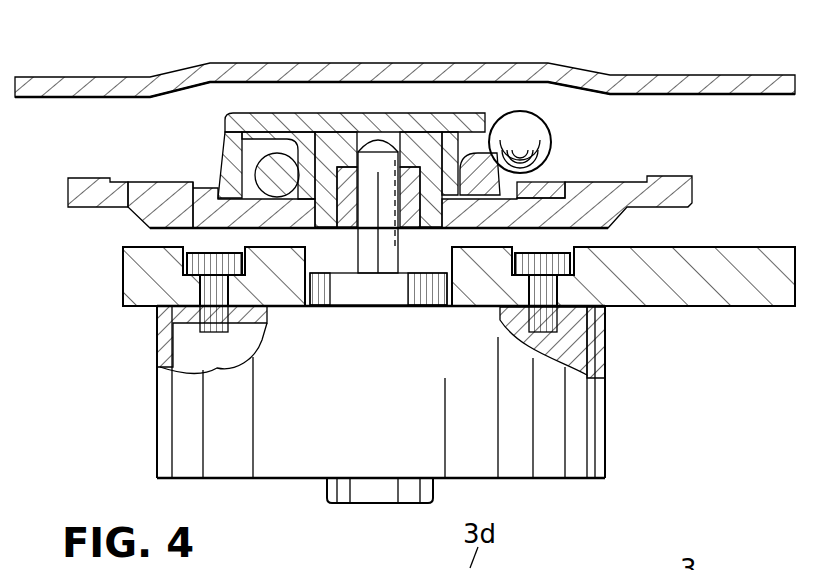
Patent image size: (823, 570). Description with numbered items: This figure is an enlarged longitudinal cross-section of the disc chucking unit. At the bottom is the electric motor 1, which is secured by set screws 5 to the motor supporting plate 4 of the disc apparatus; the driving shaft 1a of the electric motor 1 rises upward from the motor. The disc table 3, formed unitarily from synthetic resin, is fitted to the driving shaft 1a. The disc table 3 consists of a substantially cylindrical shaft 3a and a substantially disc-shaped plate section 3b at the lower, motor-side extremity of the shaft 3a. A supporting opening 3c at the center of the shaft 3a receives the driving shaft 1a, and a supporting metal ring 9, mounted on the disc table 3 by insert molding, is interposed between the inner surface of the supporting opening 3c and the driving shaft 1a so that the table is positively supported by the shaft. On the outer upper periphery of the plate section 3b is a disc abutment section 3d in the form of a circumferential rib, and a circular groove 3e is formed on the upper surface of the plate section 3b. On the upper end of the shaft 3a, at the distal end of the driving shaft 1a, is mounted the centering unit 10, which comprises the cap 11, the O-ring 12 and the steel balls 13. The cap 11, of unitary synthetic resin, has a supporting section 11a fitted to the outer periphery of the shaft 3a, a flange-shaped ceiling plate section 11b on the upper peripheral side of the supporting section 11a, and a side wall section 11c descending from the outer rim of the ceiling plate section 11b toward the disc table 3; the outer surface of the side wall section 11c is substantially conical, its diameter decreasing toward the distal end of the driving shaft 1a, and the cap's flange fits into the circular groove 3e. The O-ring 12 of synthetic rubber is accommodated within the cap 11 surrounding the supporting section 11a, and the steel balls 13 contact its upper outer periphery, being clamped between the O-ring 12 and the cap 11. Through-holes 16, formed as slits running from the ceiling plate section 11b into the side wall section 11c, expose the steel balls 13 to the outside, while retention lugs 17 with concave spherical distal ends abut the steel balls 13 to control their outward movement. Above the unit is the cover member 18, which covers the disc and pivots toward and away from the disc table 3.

The electric motor 1 is at (590, 408).
The driving shaft 1a is at (365, 250).
The disc table 3 is at (361, 131).
The shaft 3a is at (457, 150).
The plate section 3b is at (138, 180).
The supporting opening 3c is at (387, 143).
The disc abutment section 3d is at (78, 176).
The circular groove 3e is at (208, 186).
The motor supporting plate 4 is at (750, 268).
The set screws 5 is at (215, 333).
The supporting metal ring 9 is at (403, 232).
The centering unit 10 is at (568, 137).
The cap 11 is at (326, 118).
The supporting section 11a is at (286, 160).
The ceiling plate section 11b is at (348, 135).
The side wall section 11c is at (222, 137).
The O-ring 12 is at (256, 172).
The steel balls 13 is at (538, 132).
The through-holes 16 is at (492, 125).
The retention lugs 17 is at (542, 176).
The cover member 18 is at (665, 80).